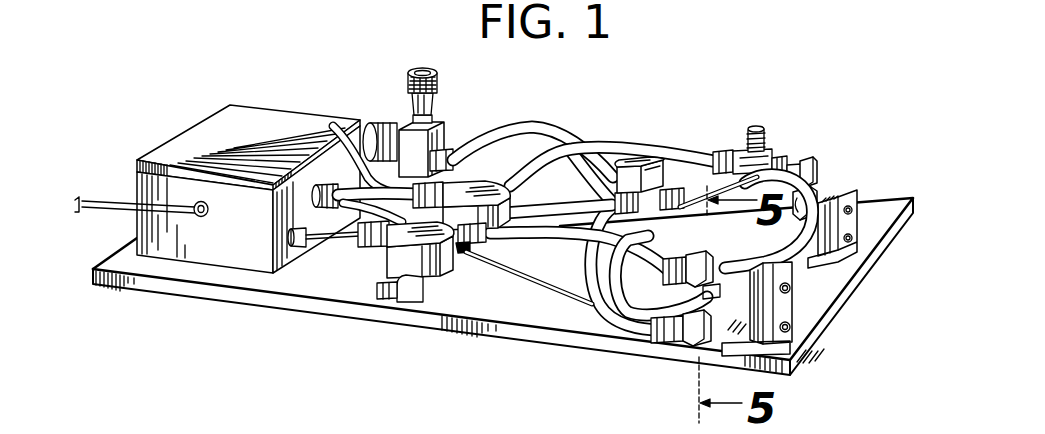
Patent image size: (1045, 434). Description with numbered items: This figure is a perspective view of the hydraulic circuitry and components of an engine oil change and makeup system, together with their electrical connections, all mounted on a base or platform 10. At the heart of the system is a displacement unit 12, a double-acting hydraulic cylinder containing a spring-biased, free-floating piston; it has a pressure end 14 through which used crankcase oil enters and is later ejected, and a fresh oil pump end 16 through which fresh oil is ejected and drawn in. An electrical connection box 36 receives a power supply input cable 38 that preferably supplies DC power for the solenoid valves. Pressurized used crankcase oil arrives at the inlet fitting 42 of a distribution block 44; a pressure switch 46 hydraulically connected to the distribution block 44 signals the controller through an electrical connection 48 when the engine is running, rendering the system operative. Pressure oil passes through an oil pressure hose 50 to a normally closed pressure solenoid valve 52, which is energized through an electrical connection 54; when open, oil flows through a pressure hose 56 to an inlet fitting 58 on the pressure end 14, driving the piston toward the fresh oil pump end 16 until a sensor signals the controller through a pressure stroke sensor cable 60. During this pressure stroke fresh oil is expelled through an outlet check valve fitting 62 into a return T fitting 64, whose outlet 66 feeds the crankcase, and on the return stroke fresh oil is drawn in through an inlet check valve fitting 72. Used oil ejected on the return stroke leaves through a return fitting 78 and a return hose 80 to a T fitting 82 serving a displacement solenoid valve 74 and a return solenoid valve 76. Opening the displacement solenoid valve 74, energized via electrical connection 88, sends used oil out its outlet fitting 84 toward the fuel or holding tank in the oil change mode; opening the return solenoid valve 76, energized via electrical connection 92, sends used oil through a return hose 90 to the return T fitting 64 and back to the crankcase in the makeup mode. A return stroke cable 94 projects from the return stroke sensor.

The base or platform 10 is at (514, 343).
The displacement unit 12 is at (800, 260).
The pressure end 14 is at (744, 302).
The fresh oil pump end 16 is at (786, 172).
The electrical connection box 36 is at (198, 141).
The power supply input cable 38 is at (102, 200).
The inlet fitting 42 is at (434, 99).
The distribution block 44 is at (441, 130).
The pressure switch 46 is at (380, 122).
The electrical connection 48 is at (353, 146).
The oil pressure hose 50 is at (524, 127).
The pressure solenoid valve 52 is at (638, 165).
The electrical connection 54 is at (520, 258).
The pressure hose 56 is at (628, 325).
The inlet fitting 58 is at (697, 344).
The pressure stroke sensor cable 60 is at (686, 218).
The outlet check valve fitting 62 is at (817, 163).
The return T fitting 64 is at (780, 130).
The outlet 66 is at (755, 128).
The inlet check valve fitting 72 is at (812, 190).
The displacement solenoid valve 74 is at (398, 255).
The return solenoid valve 76 is at (515, 204).
The return fitting 78 is at (745, 250).
The return hose 80 is at (590, 250).
The T fitting 82 is at (462, 256).
The outlet fitting 84 is at (405, 298).
The electrical connection 88 is at (333, 247).
The return hose 90 is at (602, 141).
The electrical connection 92 is at (361, 183).
The return stroke cable 94 is at (660, 306).